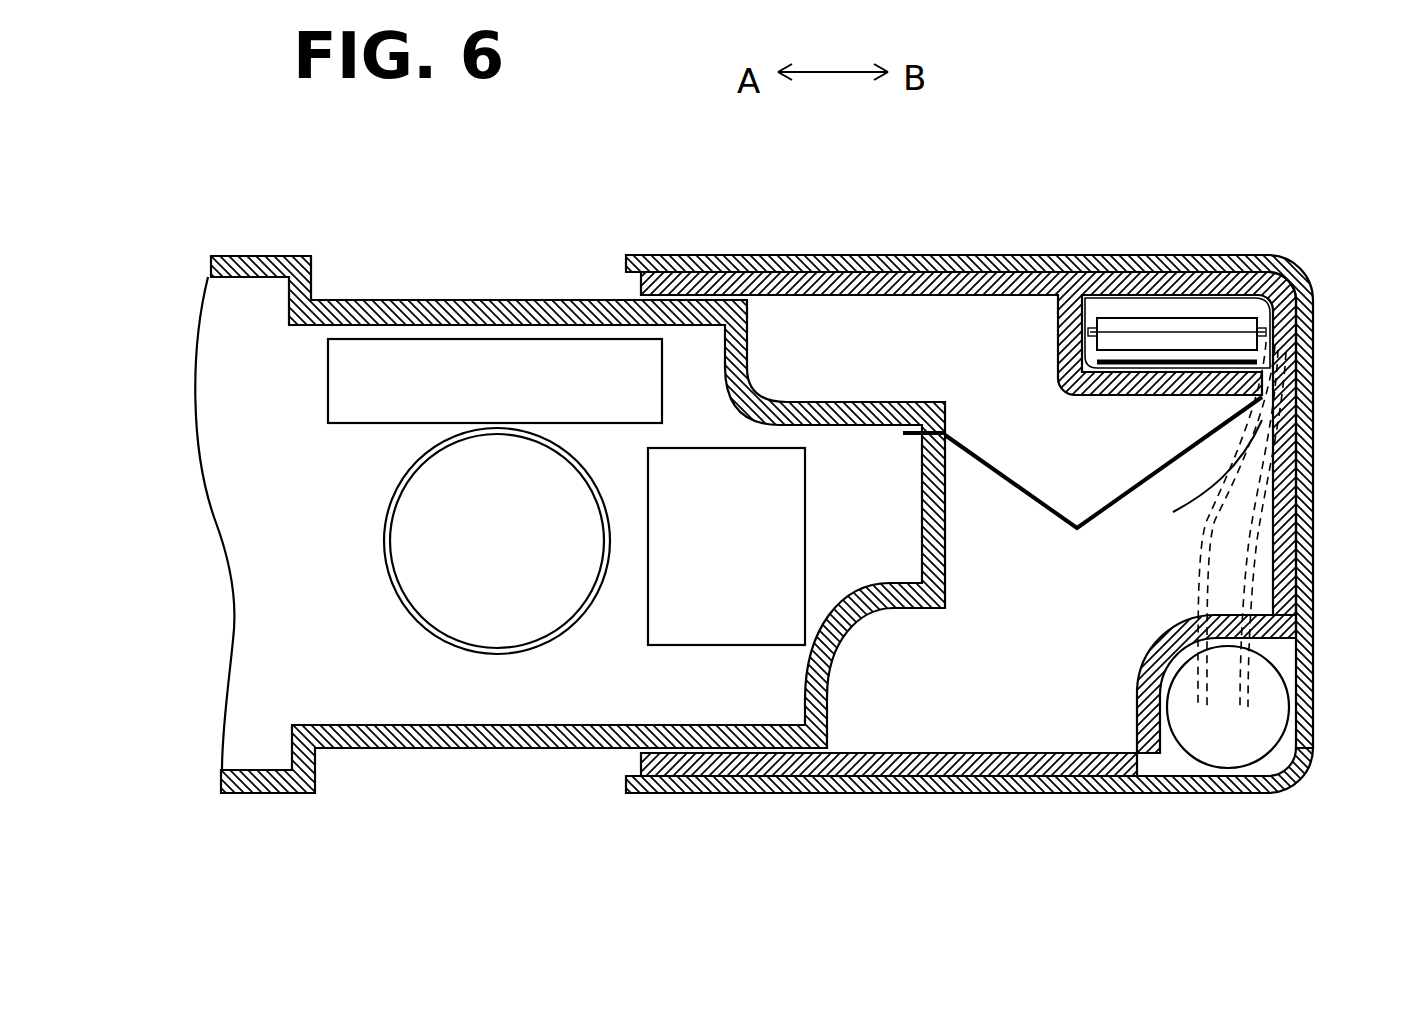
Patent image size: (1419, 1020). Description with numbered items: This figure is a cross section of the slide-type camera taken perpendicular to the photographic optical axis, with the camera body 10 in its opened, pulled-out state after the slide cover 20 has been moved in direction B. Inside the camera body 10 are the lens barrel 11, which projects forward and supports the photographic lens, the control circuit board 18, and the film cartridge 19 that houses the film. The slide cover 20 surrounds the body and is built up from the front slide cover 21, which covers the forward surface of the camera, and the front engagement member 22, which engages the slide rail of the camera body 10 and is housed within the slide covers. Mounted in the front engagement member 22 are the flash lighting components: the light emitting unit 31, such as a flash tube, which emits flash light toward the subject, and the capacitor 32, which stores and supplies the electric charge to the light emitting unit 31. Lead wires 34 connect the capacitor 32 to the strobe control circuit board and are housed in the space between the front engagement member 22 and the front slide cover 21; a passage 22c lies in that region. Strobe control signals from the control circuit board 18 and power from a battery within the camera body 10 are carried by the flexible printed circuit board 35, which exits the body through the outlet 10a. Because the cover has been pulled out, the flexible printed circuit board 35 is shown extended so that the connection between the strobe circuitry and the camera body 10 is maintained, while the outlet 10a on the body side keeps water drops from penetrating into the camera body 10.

The camera body 10 is at (423, 300).
The outlet 10a is at (945, 431).
The lens barrel 11 is at (530, 658).
The control circuit board 18 is at (328, 378).
The film cartridge 19 is at (695, 646).
The slide cover 20 is at (1056, 257).
The front slide cover 21 is at (975, 786).
The front engagement member 22 is at (875, 766).
The film passage 22c is at (1207, 524).
The light emitting unit 31 is at (1170, 320).
The capacitor 32 is at (1225, 755).
The lead wires 34 is at (1317, 572).
The flexible printed circuit board 35 is at (1043, 505).